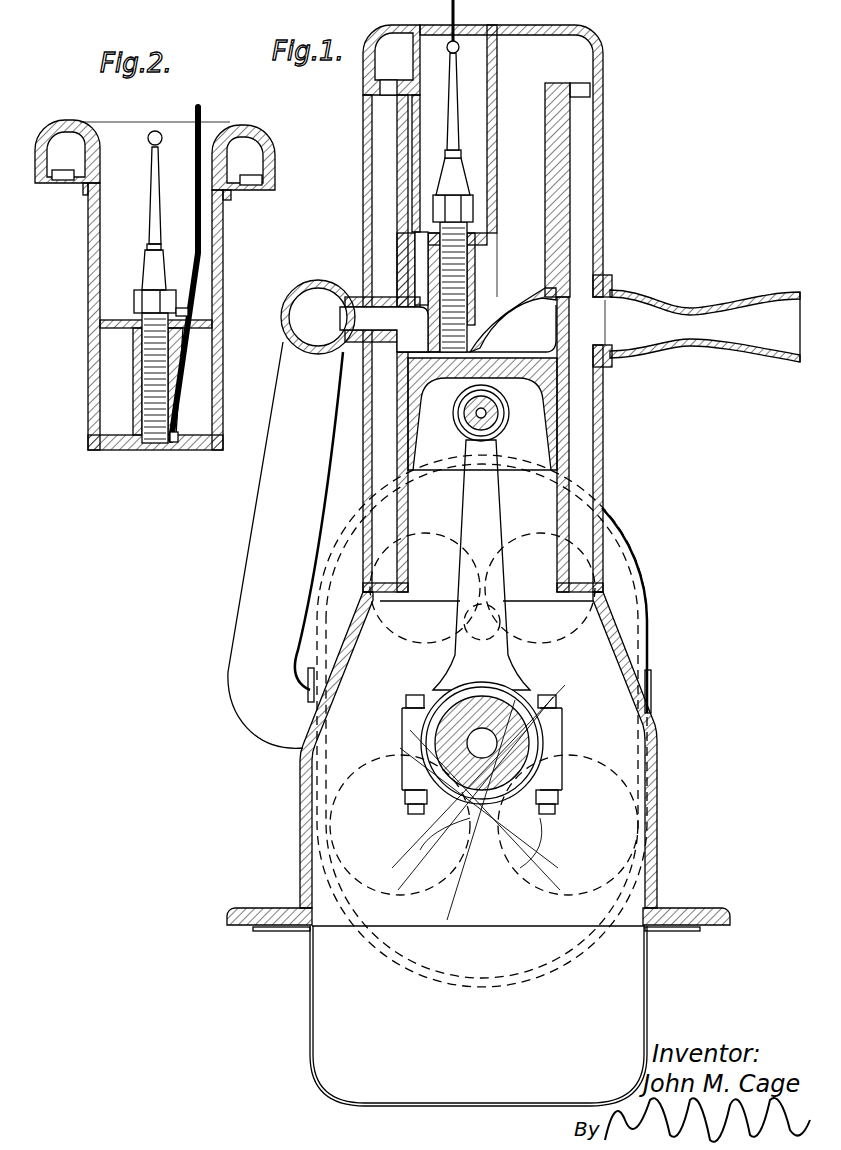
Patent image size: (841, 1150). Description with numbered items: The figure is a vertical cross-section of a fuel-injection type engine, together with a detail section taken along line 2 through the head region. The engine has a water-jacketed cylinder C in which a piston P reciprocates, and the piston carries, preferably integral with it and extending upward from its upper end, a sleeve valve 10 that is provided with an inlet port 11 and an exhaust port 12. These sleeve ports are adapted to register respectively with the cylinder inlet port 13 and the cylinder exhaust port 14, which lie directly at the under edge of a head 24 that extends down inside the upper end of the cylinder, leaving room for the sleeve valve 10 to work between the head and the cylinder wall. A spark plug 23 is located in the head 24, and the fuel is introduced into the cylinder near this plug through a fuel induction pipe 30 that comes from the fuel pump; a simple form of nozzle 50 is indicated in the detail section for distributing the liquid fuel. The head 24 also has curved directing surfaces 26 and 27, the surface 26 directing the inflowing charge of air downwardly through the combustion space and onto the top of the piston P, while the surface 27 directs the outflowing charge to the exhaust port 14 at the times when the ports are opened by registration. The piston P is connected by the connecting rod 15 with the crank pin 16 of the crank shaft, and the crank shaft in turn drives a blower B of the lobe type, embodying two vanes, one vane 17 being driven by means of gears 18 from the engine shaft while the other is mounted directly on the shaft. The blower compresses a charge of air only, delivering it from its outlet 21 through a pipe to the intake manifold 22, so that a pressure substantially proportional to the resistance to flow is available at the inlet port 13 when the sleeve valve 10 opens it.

In FIG. 1, the section line 2— 2 is at (443, 4).
In FIG. 2, the fuel induction pipe 30 is at (203, 232).
In FIG. 1, the fuel induction pipe 30 is at (456, 22).
In FIG. 1, the sleeve valve 10 is at (410, 240).
In FIG. 1, the inlet port 11 is at (410, 152).
In FIG. 1, the exhaust port 12 is at (562, 165).
In FIG. 2, the head 24 is at (222, 279).
In FIG. 1, the head 24 is at (420, 202).
In FIG. 1, the cylinder C is at (565, 215).
In FIG. 1, the curved directing surface 27 is at (523, 315).
In FIG. 1, the intake manifold 22 is at (316, 284).
In FIG. 1, the cylinder inlet port 13 is at (400, 318).
In FIG. 1, the curved directing surface 26 is at (420, 363).
In FIG. 1, the blower outlet 21 is at (266, 527).
In FIG. 1, the cylinder exhaust port 14 is at (567, 320).
In FIG. 1, the piston P is at (540, 388).
In FIG. 1, the connecting rod 15 is at (481, 565).
In FIG. 1, the crank pin 16 is at (567, 523).
In FIG. 1, the blower B is at (590, 637).
In FIG. 1, the gears 18 is at (484, 714).
In FIG. 1, the vane 17 is at (656, 790).
In FIG. 2, the spark plug 23 is at (141, 396).
In FIG. 2, the nozzle 50 is at (178, 446).